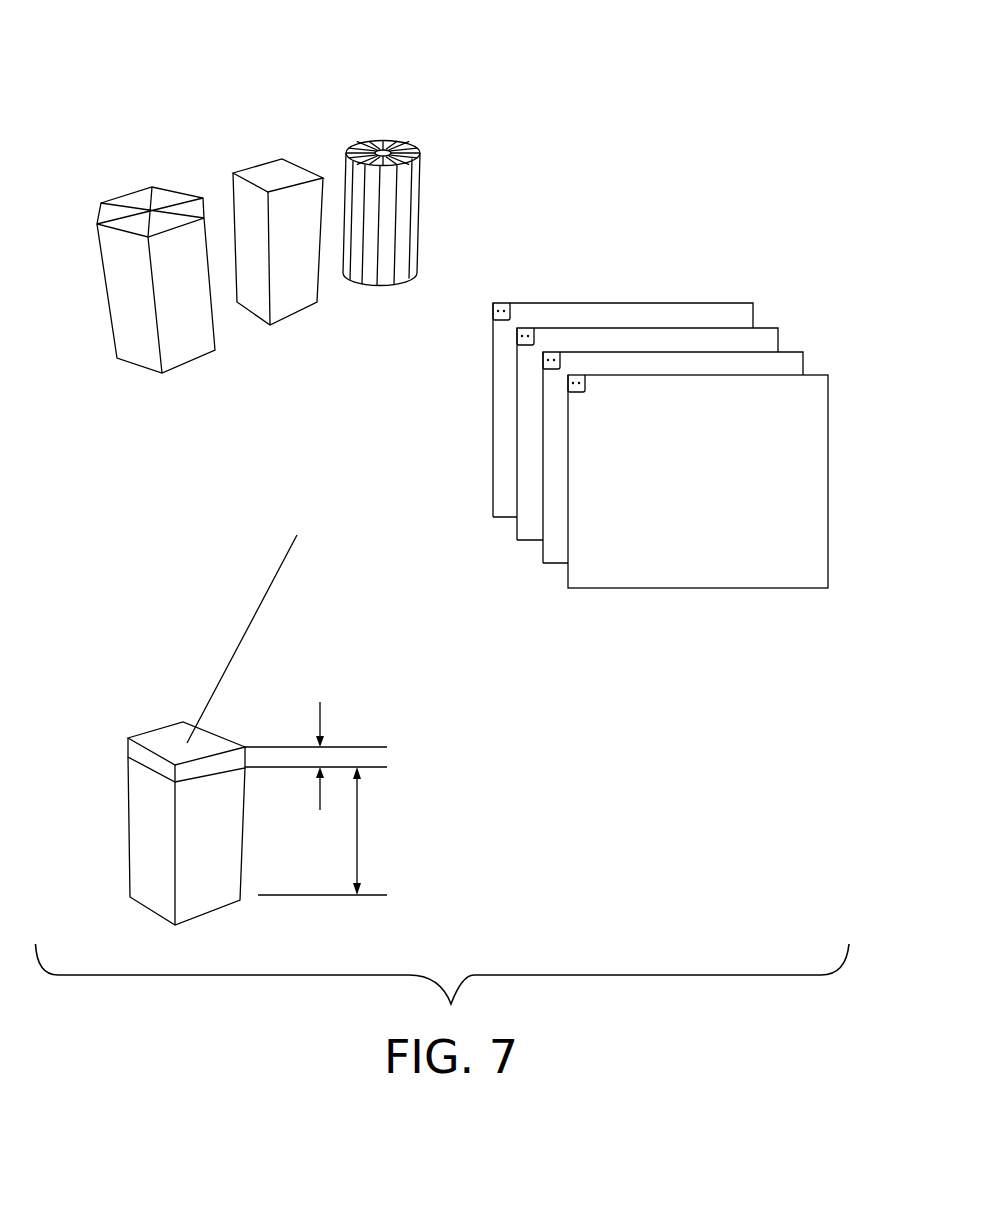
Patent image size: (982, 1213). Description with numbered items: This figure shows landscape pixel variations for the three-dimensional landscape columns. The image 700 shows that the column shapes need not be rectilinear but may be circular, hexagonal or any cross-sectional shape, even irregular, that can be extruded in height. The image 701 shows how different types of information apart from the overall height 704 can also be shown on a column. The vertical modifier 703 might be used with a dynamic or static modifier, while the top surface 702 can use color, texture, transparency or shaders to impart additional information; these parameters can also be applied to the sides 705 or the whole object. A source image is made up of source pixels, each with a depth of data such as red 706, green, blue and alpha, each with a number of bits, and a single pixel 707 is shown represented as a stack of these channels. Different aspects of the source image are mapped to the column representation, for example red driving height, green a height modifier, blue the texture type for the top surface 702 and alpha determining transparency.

The image 700 is at (190, 66).
The image 701 is at (159, 671).
The top surface 702 is at (282, 568).
The vertical modifier 703 is at (322, 717).
The overall height 704 is at (358, 830).
The sides 705 is at (143, 837).
The red 706 is at (813, 467).
The single pixel 707 is at (577, 378).